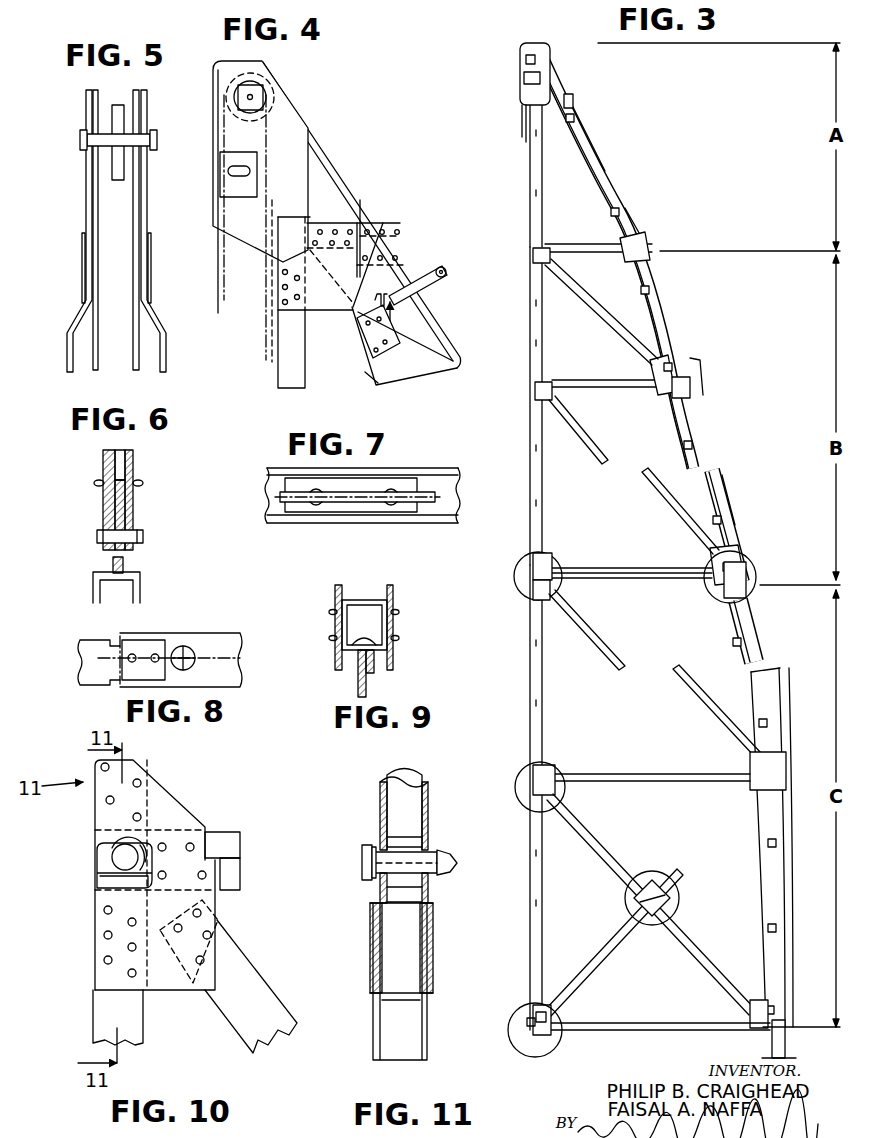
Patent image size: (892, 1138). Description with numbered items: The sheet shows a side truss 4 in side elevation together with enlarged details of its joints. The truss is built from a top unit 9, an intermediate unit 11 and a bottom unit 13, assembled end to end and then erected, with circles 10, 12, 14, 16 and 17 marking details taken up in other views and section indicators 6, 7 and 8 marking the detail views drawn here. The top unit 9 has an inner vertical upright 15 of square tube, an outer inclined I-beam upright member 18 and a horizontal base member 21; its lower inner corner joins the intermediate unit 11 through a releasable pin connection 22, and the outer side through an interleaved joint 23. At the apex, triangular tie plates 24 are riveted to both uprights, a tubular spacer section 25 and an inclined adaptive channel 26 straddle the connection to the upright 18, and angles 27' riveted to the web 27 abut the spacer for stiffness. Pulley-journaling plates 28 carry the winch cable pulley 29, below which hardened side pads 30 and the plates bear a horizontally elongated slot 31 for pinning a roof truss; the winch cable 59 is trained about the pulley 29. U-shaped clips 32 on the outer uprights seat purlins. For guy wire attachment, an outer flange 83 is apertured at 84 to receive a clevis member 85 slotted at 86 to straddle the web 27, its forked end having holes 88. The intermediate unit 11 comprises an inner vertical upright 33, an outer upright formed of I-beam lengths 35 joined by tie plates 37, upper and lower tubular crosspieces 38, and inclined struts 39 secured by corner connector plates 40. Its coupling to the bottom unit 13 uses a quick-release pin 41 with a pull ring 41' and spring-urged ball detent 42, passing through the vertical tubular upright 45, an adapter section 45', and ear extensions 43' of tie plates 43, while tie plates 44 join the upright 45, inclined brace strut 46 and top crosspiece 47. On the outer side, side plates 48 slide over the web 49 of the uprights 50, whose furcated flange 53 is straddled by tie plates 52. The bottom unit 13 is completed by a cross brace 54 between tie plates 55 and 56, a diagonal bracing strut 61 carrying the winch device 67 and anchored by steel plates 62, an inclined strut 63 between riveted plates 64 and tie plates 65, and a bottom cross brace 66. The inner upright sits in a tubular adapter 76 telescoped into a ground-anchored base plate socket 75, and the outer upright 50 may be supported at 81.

In FIG. 3, the side truss 4 is at (751, 451).
In FIG. 4, the section line 6— 6 is at (453, 267).
In FIG. 4, the direction arrow 7 is at (378, 326).
In FIG. 3, the direction arrow 8 is at (513, 238).
In FIG. 3, the top unit 9 is at (616, 170).
In FIG. 4, the top unit 9 is at (404, 213).
In FIG. 3, the circle 10 is at (514, 573).
In FIG. 3, the intermediate unit 11 is at (726, 465).
In FIG. 3, the circle 12 is at (748, 577).
In FIG. 3, the bottom unit 13 is at (761, 670).
In FIG. 3, the circle 14 is at (524, 800).
In FIG. 3, the inner vertical upright 15 is at (543, 204).
In FIG. 4, the inner vertical upright 15 is at (299, 362).
In FIG. 3, the circle 16 is at (662, 858).
In FIG. 3, the circle 17 is at (510, 1037).
In FIG. 3, the outer upright member 18 is at (594, 122).
In FIG. 4, the outer upright member 18 is at (454, 364).
In FIG. 6, the outer upright member 18 is at (93, 576).
In FIG. 8, the outer upright member 18 is at (243, 633).
In FIG. 3, the horizontal base member 21 is at (600, 243).
In FIG. 3, the releasable pin connection 22 is at (533, 256).
In FIG. 3, the interleaved joint 23 is at (652, 270).
In FIG. 3, the tie plates 24 is at (574, 99).
In FIG. 4, the tie plates 24 is at (318, 167).
In FIG. 5, the tie plates 24 is at (92, 278).
In FIG. 4, the tubular spacer section 25 is at (309, 216).
In FIG. 7, the tubular spacer section 25 is at (441, 483).
In FIG. 3, the adaptive channel 26 is at (558, 75).
In FIG. 4, the adaptive channel 26 is at (346, 173).
In FIG. 7, the adaptive channel 26 is at (378, 470).
In FIG. 8, the adaptive channel 26 is at (88, 650).
In FIG. 9, the adaptive channel 26 is at (387, 670).
In FIG. 3, the web 27 is at (634, 182).
In FIG. 4, the web 27 is at (415, 331).
In FIG. 6, the web 27 is at (147, 556).
In FIG. 7, the web 27 is at (385, 489).
In FIG. 8, the web 27 is at (186, 667).
In FIG. 9, the web 27 is at (400, 650).
In FIG. 7, the angles 27' is at (338, 520).
In FIG. 9, the angles 27' is at (334, 647).
In FIG. 3, the pulley-journaling plates 28 is at (521, 46).
In FIG. 4, the pulley-journaling plates 28 is at (253, 239).
In FIG. 5, the pulley-journaling plates 28 is at (92, 208).
In FIG. 3, the winch cable pulley 29 is at (524, 62).
In FIG. 4, the winch cable pulley 29 is at (264, 69).
In FIG. 5, the winch cable pulley 29 is at (117, 106).
In FIG. 4, the side plates or pads 30 is at (238, 157).
In FIG. 5, the side plates or pads 30 is at (85, 273).
In FIG. 3, the slot 31 is at (522, 82).
In FIG. 4, the slot 31 is at (228, 170).
In FIG. 3, the U-shaped clips 32 is at (572, 122).
In FIG. 4, the U-shaped clips 32 is at (370, 367).
In FIG. 3, the inner vertical upright 33 is at (545, 455).
In FIG. 10, the inner vertical upright 33 is at (148, 772).
In FIG. 11, the inner vertical upright 33 is at (395, 808).
In FIG. 3, the I-beam lengths 35 is at (697, 392).
In FIG. 3, the tie plates 37 is at (677, 395).
In FIG. 3, the tubular crosspieces 38 is at (627, 380).
In FIG. 10, the tubular crosspieces 38 is at (228, 837).
In FIG. 3, the inclined struts 39 is at (586, 298).
In FIG. 3, the corner connector plates 40 is at (556, 283).
In FIG. 10, the quick-release pin 41 is at (99, 861).
In FIG. 11, the quick-release pin 41 is at (431, 872).
In FIG. 10, the pull ring 41' is at (166, 820).
In FIG. 11, the pull ring 41' is at (350, 876).
In FIG. 11, the spring-urged ball detent 42 is at (432, 845).
In FIG. 3, the tie plates 43 is at (561, 558).
In FIG. 10, the tie plates 43 is at (150, 874).
In FIG. 11, the tie plates 43 is at (404, 800).
In FIG. 10, the ear or tongue extensions 43' is at (104, 873).
In FIG. 11, the ear or tongue extensions 43' is at (431, 894).
In FIG. 3, the tie plates 44 is at (537, 590).
In FIG. 10, the tie plates 44 is at (178, 980).
In FIG. 11, the tie plates 44 is at (430, 960).
In FIG. 3, the vertical tubular upright 45 is at (556, 797).
In FIG. 10, the vertical tubular upright 45 is at (99, 1026).
In FIG. 11, the vertical tubular upright 45 is at (422, 981).
In FIG. 10, the adapter section 45' is at (100, 911).
In FIG. 11, the adapter section 45' is at (374, 1006).
In FIG. 3, the inclined brace strut 46 is at (607, 664).
In FIG. 10, the inclined brace strut 46 is at (258, 983).
In FIG. 3, the top crosspiece 47 is at (637, 585).
In FIG. 10, the top crosspiece 47 is at (240, 887).
In FIG. 3, the side plates 48 is at (724, 592).
In FIG. 3, the web 49 is at (775, 671).
In FIG. 3, the uprights 50 is at (750, 683).
In FIG. 3, the tie plates 52 is at (717, 590).
In FIG. 6, the furcated flange 53 is at (97, 594).
In FIG. 3, the cross brace 54 is at (658, 787).
In FIG. 3, the tie plates 55 is at (542, 770).
In FIG. 3, the tie plates 56 is at (760, 781).
In FIG. 3, the winch cable 59 is at (521, 121).
In FIG. 4, the winch cable 59 is at (268, 332).
In FIG. 3, the diagonal bracing strut 61 is at (613, 853).
In FIG. 3, the steel plates 62 is at (750, 1013).
In FIG. 3, the inclined strut 63 is at (612, 953).
In FIG. 3, the riveted plates 64 is at (647, 903).
In FIG. 3, the tie plates 65 is at (551, 1013).
In FIG. 3, the bottom cross brace 66 is at (677, 1032).
In FIG. 3, the winch device 67 is at (673, 874).
In FIG. 3, the base plate socket 75 is at (544, 1047).
In FIG. 9, the base plate socket 75 is at (371, 600).
In FIG. 3, the tubular adapter 76 is at (527, 1030).
In FIG. 3, the support point 81 is at (773, 1040).
In FIG. 6, the outer flange 83 is at (97, 482).
In FIG. 8, the outer flange 83 is at (213, 645).
In FIG. 6, the aperture 84 is at (113, 487).
In FIG. 6, the clevis member 85 is at (133, 508).
In FIG. 8, the clevis member 85 is at (192, 668).
In FIG. 6, the slot 86 is at (97, 535).
In FIG. 6, the holes 88 is at (132, 458).
In FIG. 8, the holes 88 is at (183, 646).